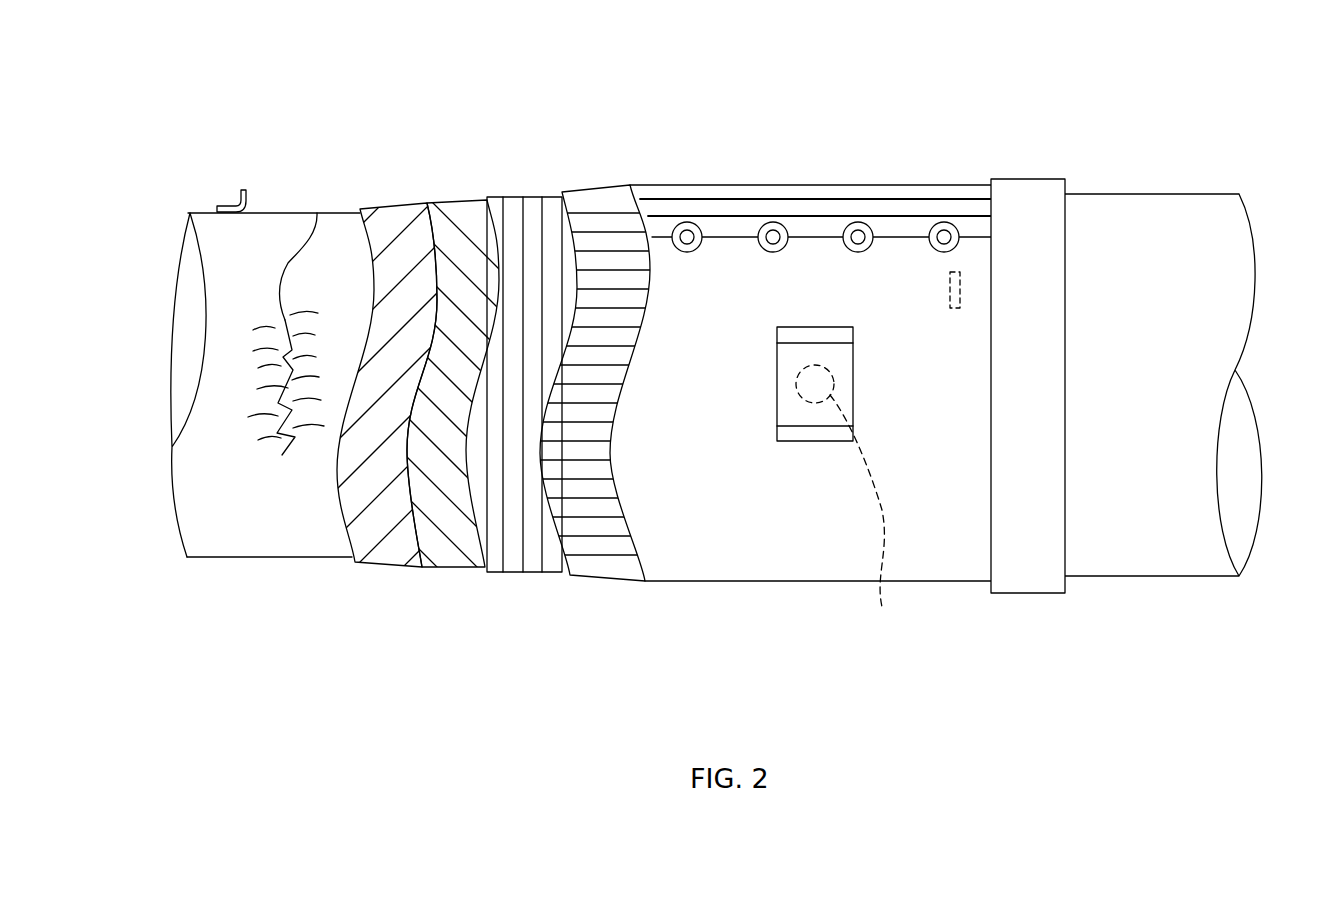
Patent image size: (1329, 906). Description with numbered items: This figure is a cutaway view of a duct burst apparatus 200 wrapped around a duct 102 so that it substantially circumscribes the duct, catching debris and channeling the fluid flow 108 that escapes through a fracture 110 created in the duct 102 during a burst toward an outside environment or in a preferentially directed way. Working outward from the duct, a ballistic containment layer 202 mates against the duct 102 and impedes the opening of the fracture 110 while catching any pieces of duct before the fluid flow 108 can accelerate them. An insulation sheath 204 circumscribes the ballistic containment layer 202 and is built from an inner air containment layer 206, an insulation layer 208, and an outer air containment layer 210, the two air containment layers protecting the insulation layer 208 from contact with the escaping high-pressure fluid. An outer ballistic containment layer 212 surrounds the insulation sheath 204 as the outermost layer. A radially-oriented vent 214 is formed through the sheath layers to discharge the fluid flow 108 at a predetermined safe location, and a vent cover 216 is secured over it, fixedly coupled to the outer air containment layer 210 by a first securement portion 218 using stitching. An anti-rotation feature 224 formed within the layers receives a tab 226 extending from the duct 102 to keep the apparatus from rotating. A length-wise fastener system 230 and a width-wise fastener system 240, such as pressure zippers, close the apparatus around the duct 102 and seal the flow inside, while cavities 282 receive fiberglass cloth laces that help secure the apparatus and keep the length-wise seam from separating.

The duct burst apparatus 200 is at (200, 124).
The duct 102 is at (185, 553).
The fluid flow 108 is at (250, 435).
The fracture 110 is at (317, 213).
The tab 226 is at (241, 191).
The ballistic containment layer 202 is at (390, 553).
The insulation sheath 204 is at (633, 168).
The inner air containment layer 206 is at (455, 558).
The insulation layer 208 is at (515, 563).
The outer air containment layer 210 is at (605, 563).
The outer ballistic containment layer 212 is at (948, 570).
The radially-oriented vent 214 is at (770, 393).
The vent cover 216 is at (842, 334).
The first securement portion 218 is at (795, 433).
The anti-rotation feature 224 is at (948, 287).
The length-wise fastener system 230 is at (713, 208).
The cavities 282 is at (856, 225).
The width-wise fastener system 240 is at (1029, 186).